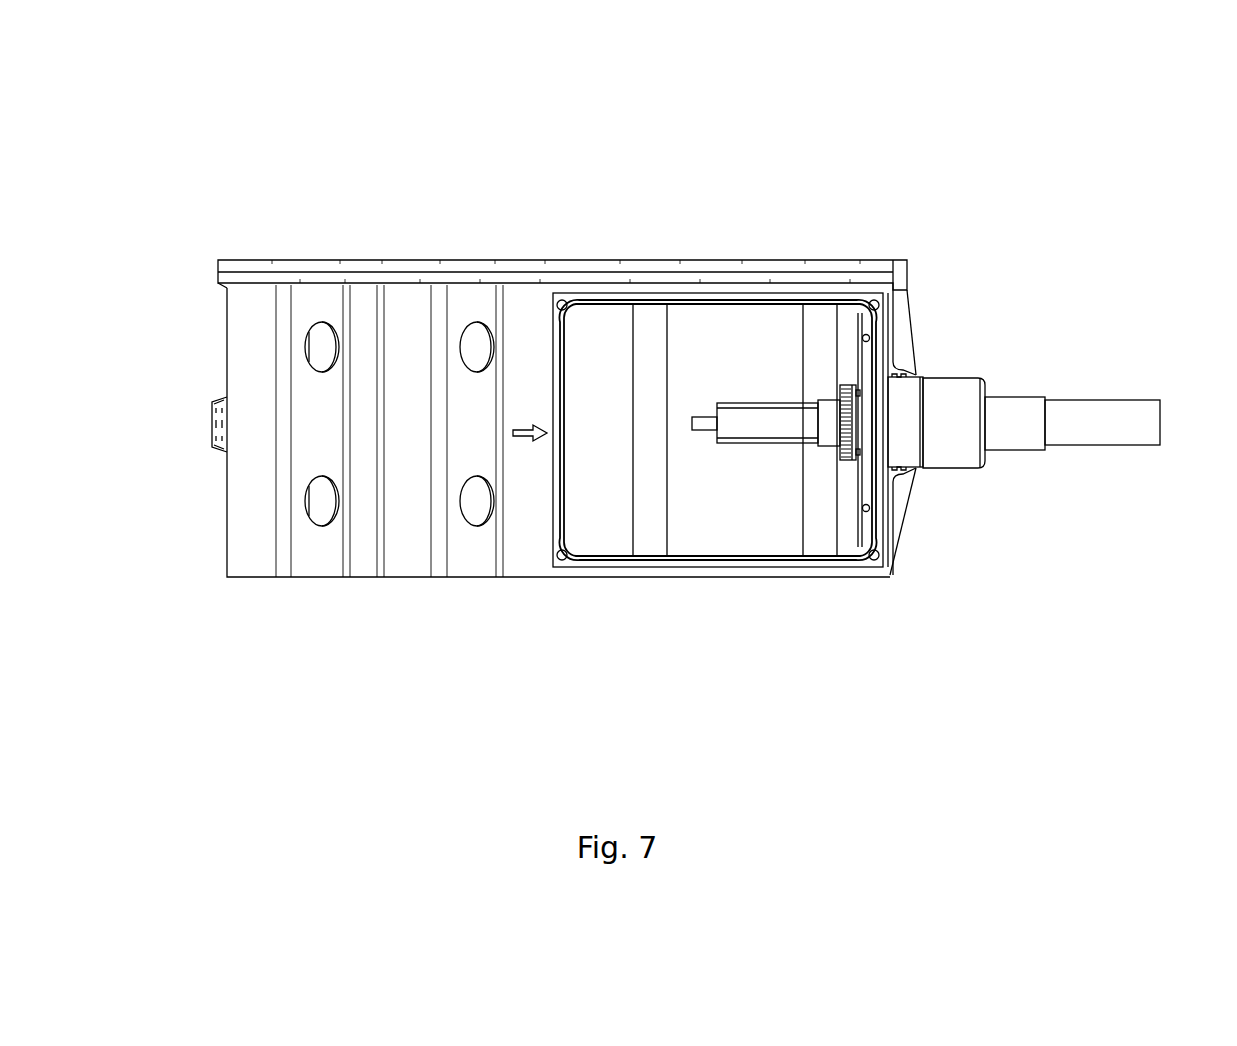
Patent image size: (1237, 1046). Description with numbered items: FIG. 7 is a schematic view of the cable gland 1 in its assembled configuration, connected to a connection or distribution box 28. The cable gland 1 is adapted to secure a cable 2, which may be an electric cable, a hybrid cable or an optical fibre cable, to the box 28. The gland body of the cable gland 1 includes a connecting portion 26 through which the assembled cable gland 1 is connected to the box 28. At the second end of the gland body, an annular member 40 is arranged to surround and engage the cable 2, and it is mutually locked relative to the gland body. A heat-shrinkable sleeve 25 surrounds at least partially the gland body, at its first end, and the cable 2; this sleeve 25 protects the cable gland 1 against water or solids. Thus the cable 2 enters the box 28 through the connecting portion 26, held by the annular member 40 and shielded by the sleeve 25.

The cable gland 1 is at (702, 397).
The cable 2 is at (1105, 428).
The heat-shrinkable sleeve 25 is at (1015, 440).
The connecting portion 26 is at (905, 466).
The connection or distribution box 28 is at (633, 253).
The annular member 40 is at (848, 460).